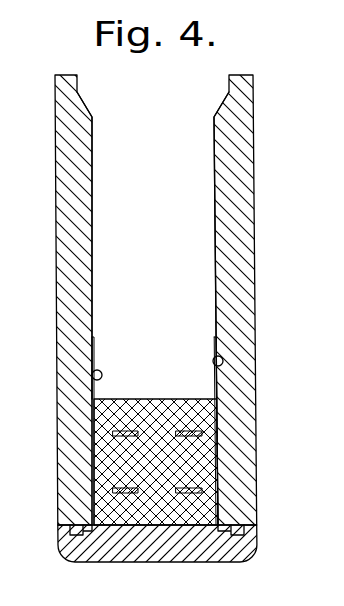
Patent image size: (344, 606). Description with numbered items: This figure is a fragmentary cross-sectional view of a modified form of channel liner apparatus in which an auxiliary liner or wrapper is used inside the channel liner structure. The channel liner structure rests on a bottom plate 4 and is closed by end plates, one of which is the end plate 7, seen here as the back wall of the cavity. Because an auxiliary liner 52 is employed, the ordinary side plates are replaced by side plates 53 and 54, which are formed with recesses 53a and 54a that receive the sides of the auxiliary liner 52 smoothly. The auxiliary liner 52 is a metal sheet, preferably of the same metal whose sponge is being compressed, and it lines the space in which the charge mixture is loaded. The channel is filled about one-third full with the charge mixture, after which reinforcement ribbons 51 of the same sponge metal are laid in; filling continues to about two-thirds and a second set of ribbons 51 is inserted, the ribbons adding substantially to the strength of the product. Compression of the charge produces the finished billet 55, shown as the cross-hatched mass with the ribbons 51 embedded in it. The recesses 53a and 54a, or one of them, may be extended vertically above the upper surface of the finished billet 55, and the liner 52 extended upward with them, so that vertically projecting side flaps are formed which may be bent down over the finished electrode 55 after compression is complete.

The bottom plate 4 is at (156, 551).
The end plate 7 is at (193, 157).
The reinforcement ribbons 51 is at (195, 492).
The auxiliary liner 52 is at (92, 457).
The side plate 53 is at (63, 291).
The recess 53a is at (95, 380).
The side plate 54 is at (245, 282).
The recess 54a is at (222, 358).
The finished billet 55 is at (200, 458).